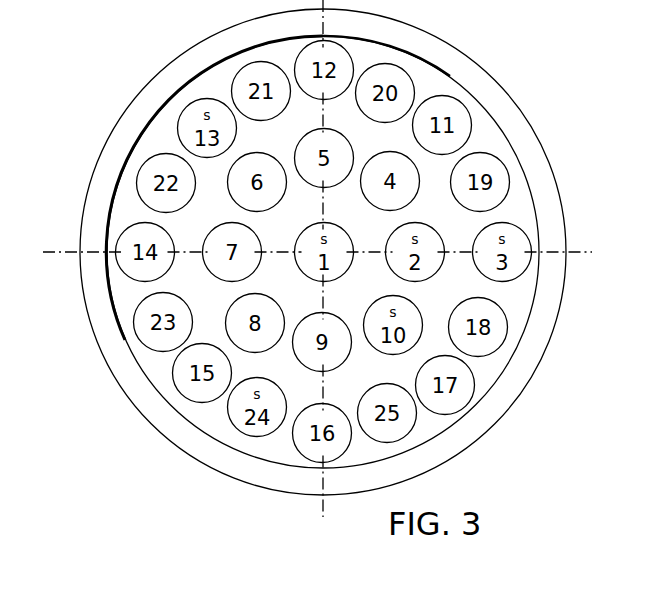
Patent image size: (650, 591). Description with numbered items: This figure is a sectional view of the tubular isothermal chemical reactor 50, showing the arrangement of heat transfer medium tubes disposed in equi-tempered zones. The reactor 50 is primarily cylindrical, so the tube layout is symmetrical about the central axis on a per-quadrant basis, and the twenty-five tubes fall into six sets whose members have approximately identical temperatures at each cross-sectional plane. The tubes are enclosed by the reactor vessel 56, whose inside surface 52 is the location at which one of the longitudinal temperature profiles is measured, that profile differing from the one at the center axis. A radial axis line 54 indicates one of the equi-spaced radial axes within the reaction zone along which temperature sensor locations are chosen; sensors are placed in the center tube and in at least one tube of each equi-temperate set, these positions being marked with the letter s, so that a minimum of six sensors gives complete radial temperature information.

The isothermal chemical reactor 50 is at (462, 457).
The reactor vessel inside surface 52 is at (488, 382).
The radial axis line 54 is at (574, 258).
The reactor vessel 56 is at (490, 418).